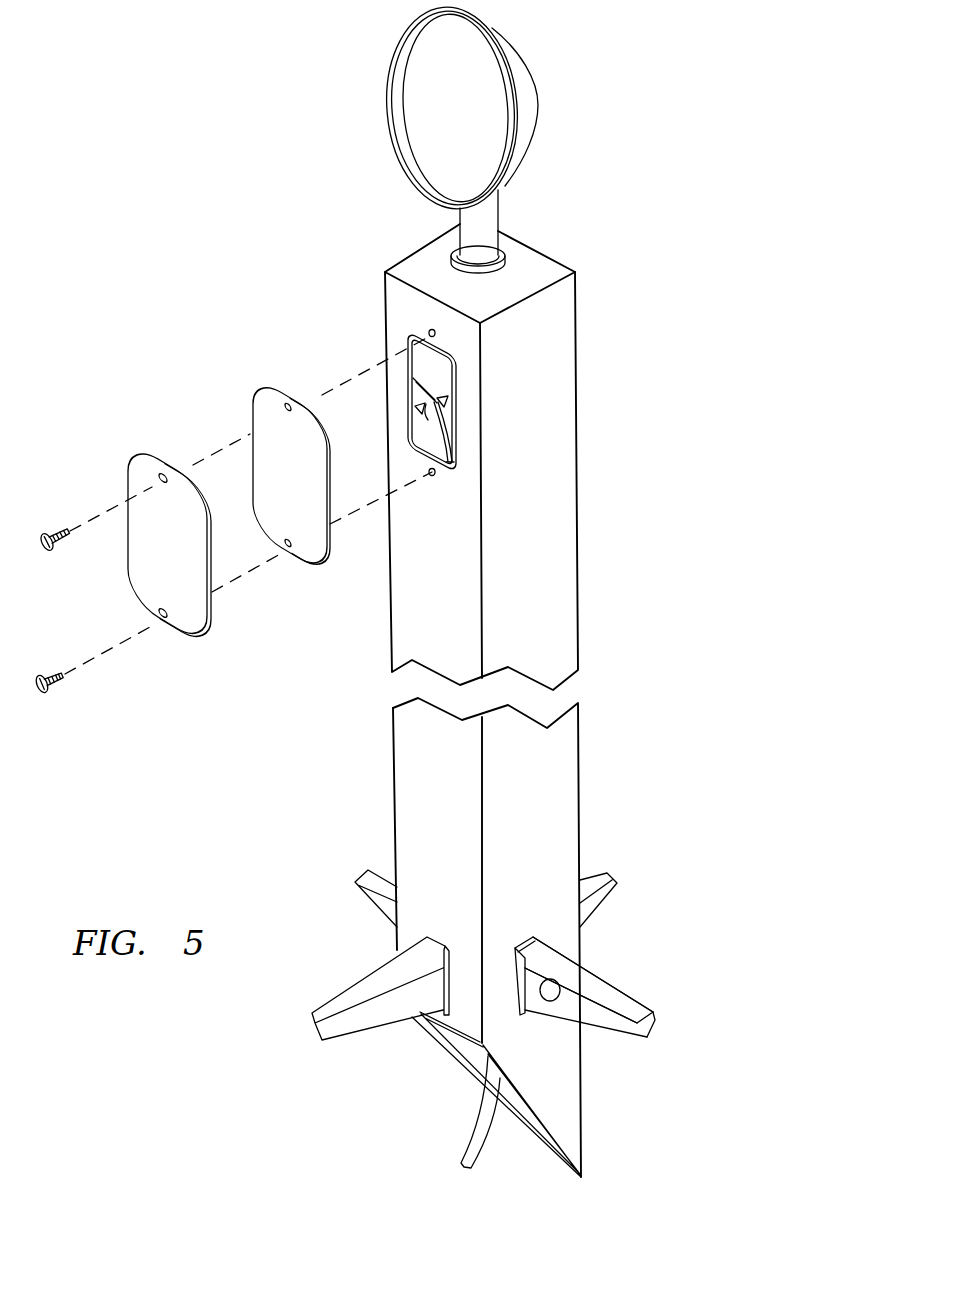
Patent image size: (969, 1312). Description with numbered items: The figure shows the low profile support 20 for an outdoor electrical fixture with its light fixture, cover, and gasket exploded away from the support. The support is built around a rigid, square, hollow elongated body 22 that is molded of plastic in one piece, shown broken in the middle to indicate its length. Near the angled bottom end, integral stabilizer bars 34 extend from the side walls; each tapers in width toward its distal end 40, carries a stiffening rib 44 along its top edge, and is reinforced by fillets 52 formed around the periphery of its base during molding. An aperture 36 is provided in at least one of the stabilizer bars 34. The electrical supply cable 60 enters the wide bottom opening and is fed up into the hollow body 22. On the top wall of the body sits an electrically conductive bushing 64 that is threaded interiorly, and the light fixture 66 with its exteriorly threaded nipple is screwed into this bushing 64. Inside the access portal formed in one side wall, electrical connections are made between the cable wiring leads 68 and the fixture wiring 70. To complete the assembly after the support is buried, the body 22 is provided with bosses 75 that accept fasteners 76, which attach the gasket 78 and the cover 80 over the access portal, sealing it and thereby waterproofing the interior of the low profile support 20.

The low profile support 20 is at (630, 529).
The elongated body 22 is at (576, 355).
The stabilizer bar 34 is at (613, 1007).
The aperture 36 is at (550, 996).
The distal end 40 is at (648, 1025).
The stiffening rib 44 is at (587, 980).
The fillet 52 is at (582, 938).
The electrical supply cable 60 is at (467, 1148).
The electrically conductive bushing 64 is at (498, 268).
The light fixture 66 is at (533, 104).
The cable wiring leads 68 is at (421, 425).
The fixture wiring 70 is at (433, 397).
The boss 75 is at (443, 460).
The fastener 76 is at (45, 530).
The gasket 78 is at (307, 547).
The cover 80 is at (183, 623).